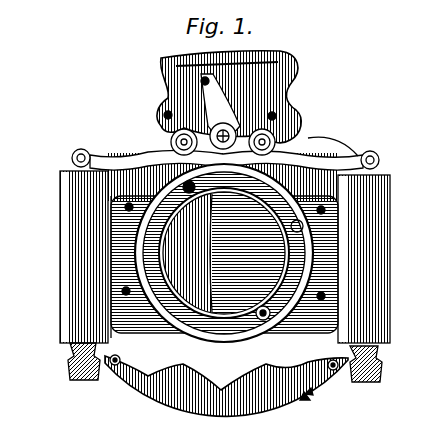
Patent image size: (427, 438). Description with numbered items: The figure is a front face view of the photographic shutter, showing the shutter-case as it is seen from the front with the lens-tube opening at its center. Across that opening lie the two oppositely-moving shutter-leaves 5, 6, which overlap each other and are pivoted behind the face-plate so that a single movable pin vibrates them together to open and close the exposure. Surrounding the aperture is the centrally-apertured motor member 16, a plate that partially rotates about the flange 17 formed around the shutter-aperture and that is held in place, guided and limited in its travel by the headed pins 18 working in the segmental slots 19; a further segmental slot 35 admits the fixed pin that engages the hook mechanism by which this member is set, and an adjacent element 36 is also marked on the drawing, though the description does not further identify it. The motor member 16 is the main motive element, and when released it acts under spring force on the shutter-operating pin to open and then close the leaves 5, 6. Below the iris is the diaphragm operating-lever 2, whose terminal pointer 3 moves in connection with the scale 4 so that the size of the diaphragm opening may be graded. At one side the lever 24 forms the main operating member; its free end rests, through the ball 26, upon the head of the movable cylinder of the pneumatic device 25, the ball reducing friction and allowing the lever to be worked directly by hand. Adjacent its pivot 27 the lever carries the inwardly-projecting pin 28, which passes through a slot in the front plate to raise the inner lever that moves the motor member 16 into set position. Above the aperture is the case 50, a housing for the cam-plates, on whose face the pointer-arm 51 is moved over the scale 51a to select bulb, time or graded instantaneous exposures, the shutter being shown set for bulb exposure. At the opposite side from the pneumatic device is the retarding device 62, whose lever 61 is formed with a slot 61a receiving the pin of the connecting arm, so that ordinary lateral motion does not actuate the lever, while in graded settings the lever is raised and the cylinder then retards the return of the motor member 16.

The operating-lever 2 is at (304, 388).
The terminal pointer 3 is at (299, 393).
The scale 4 is at (258, 402).
The shutter-leaf 5 is at (185, 253).
The shutter-leaf 6 is at (227, 253).
The motor member 16 is at (216, 318).
The flange 17 is at (186, 303).
The headed pins 18 is at (264, 305).
The segmental slots 19 is at (266, 305).
The lever 24 is at (148, 160).
The pneumatic device 25 is at (84, 275).
The ball 26 is at (73, 148).
The pivot 27 is at (200, 145).
The inwardly-projecting pin 28 is at (178, 152).
The segmental slot 35 is at (190, 200).
The bore mark 36 is at (220, 215).
The case 50 is at (230, 98).
The pointer-arm 51 is at (222, 112).
The scale 51a is at (183, 68).
The lever 61 is at (305, 147).
The slot 61a is at (282, 148).
The retarding device 62 is at (364, 278).